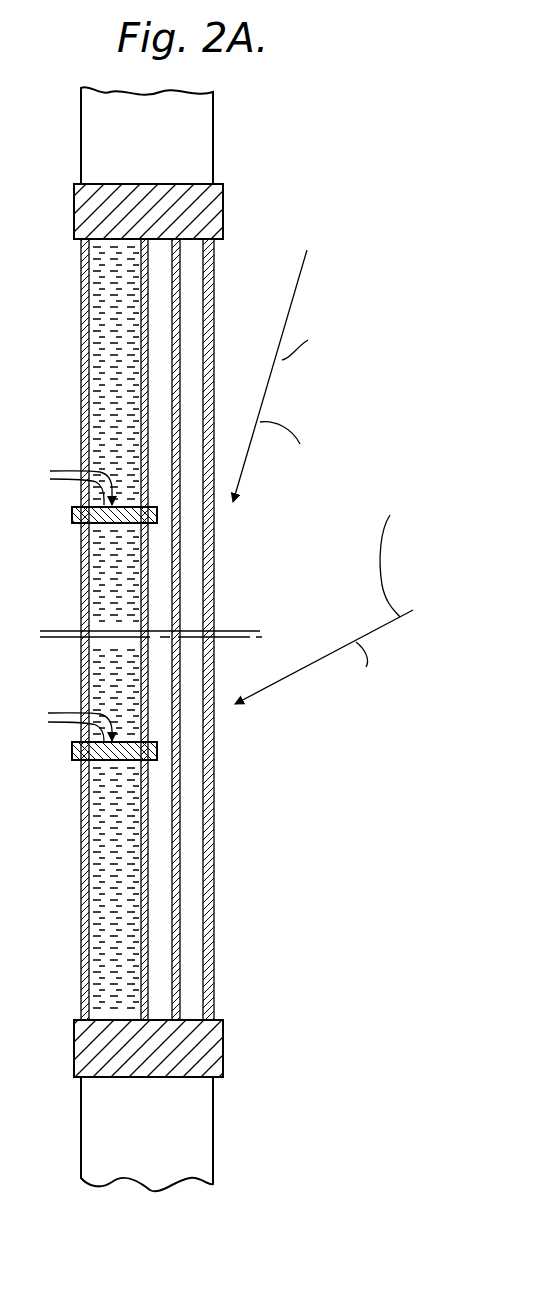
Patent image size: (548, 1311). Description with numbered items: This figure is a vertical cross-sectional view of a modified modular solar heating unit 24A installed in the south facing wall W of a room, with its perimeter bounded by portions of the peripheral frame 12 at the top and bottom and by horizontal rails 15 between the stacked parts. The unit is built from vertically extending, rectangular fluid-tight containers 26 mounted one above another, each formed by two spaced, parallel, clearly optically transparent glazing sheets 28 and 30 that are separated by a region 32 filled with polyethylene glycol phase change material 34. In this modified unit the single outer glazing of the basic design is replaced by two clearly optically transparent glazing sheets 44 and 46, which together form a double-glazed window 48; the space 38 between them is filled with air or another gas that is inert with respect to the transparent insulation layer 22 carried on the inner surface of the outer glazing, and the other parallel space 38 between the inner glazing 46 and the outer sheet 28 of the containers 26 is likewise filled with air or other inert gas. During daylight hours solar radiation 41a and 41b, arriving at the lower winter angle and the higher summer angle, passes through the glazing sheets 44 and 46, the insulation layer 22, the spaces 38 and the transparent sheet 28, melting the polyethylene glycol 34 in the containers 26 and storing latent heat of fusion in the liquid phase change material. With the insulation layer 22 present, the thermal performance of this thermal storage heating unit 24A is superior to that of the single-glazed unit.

The south facing wall W is at (213, 137).
The peripheral frame 12 is at (223, 208).
The modified solar heating unit 24A is at (249, 296).
The fluid-tight container 26 is at (107, 232).
The glazing sheet 28 is at (150, 305).
The glazing sheet 30 is at (82, 362).
The region 32 is at (80, 627).
The polyethylene glycol phase change material 34 is at (100, 388).
The horizontal rail 15 is at (68, 594).
The space 38 is at (158, 788).
The transparent insulation layer 22 is at (196, 895).
The outer glazing sheet 44 is at (251, 629).
The inner glazing sheet 46 is at (173, 970).
The double-glazed window 48 is at (218, 568).
The solar radiation 41a is at (325, 655).
The solar radiation 41b is at (263, 395).